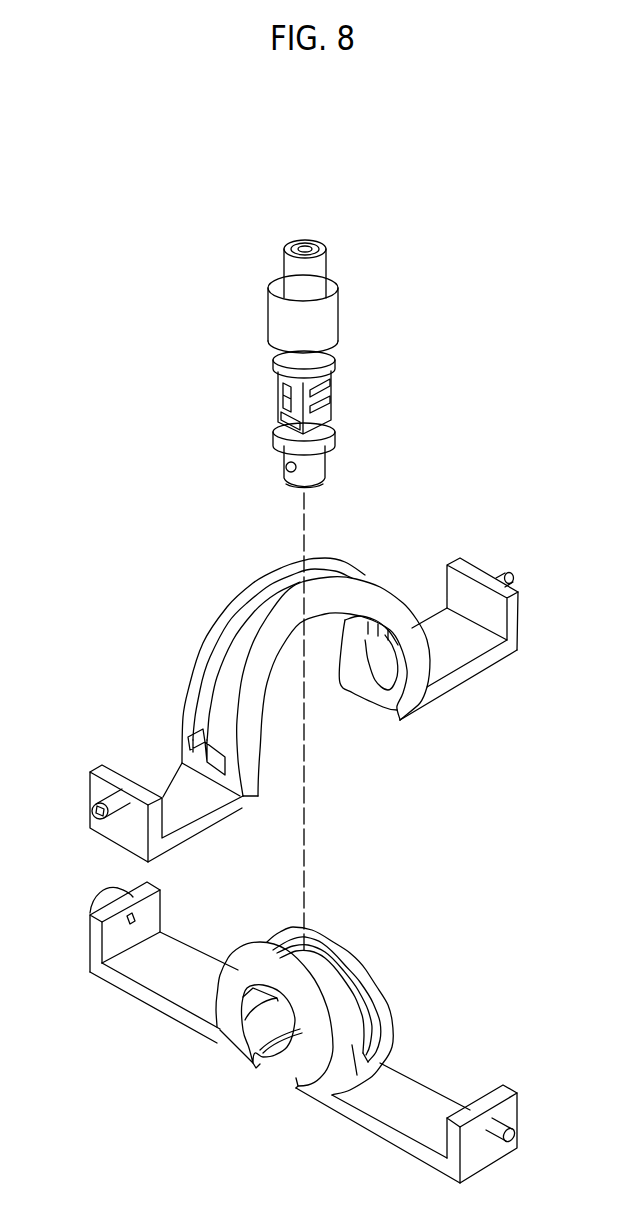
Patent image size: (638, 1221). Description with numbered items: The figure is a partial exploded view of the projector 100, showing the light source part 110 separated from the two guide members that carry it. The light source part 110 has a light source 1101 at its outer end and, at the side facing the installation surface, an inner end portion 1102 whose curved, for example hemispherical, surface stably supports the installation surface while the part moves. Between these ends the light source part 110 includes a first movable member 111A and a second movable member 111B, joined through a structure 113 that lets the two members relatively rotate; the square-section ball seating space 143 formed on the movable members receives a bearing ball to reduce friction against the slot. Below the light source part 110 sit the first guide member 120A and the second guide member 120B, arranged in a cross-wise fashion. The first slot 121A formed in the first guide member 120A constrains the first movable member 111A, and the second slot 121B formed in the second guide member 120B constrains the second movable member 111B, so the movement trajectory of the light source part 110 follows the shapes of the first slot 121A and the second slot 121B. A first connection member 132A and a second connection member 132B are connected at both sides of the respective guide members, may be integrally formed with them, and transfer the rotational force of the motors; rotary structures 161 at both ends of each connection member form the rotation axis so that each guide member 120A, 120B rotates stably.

The projector 100 is at (105, 218).
The light source part 110 is at (238, 306).
The light source 1101 is at (318, 243).
The first movable member 111A is at (349, 316).
The structure 113 is at (348, 391).
The ball seating space 143 is at (277, 417).
The second movable member 111B is at (350, 419).
The inner end portion 1102 is at (302, 492).
The first guide member 120A is at (368, 553).
The first slot 121A is at (255, 647).
The first connection member 132A is at (215, 822).
The second guide member 120B is at (362, 920).
The second slot 121B is at (350, 1005).
The second connection member 132B is at (367, 1120).
The rotary structure 161 is at (505, 555).